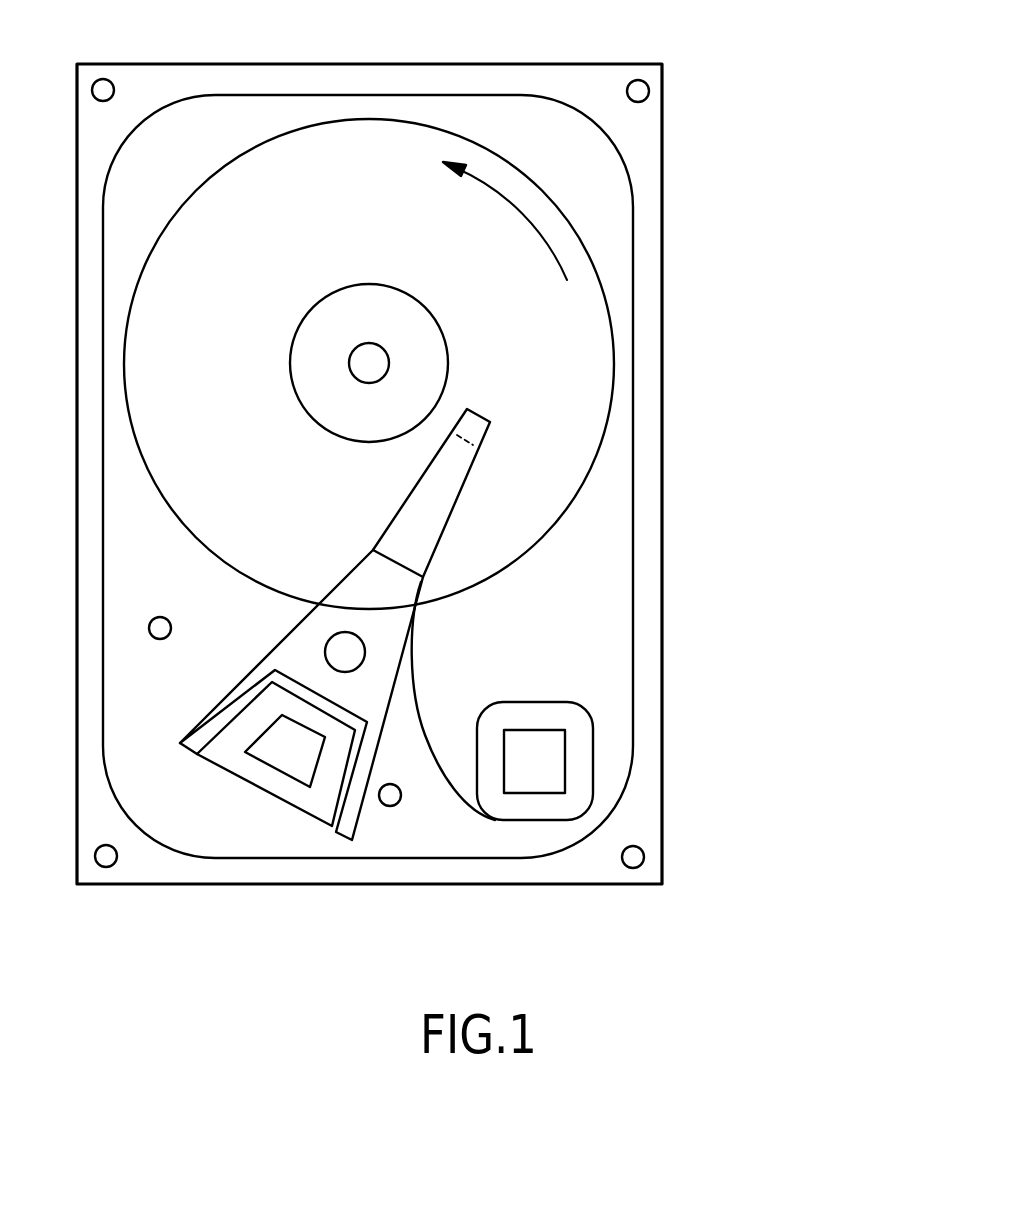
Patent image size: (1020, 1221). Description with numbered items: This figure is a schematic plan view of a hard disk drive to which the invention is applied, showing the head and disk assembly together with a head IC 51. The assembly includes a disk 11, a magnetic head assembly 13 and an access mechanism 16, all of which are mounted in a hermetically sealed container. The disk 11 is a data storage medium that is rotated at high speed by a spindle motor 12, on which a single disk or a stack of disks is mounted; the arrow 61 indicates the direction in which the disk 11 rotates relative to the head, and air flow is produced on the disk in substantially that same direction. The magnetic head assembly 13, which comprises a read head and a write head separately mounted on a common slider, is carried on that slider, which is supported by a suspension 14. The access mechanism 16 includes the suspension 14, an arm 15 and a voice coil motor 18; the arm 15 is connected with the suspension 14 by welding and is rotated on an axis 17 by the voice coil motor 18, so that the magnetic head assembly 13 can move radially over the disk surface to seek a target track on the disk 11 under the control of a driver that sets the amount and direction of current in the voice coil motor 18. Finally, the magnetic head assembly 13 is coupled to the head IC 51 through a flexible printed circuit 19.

The disk 11 is at (593, 387).
The spindle motor 12 is at (403, 308).
The magnetic head assembly 13 is at (477, 427).
The suspension 14 is at (500, 436).
The arm 15 is at (362, 606).
The access mechanism 16 is at (362, 606).
The axis 17 is at (330, 650).
The voice coil motor 18 is at (278, 762).
The flexible printed circuit 19 is at (423, 723).
The head IC 51 is at (545, 740).
The arrow indicating direction of rotation 61 is at (514, 206).